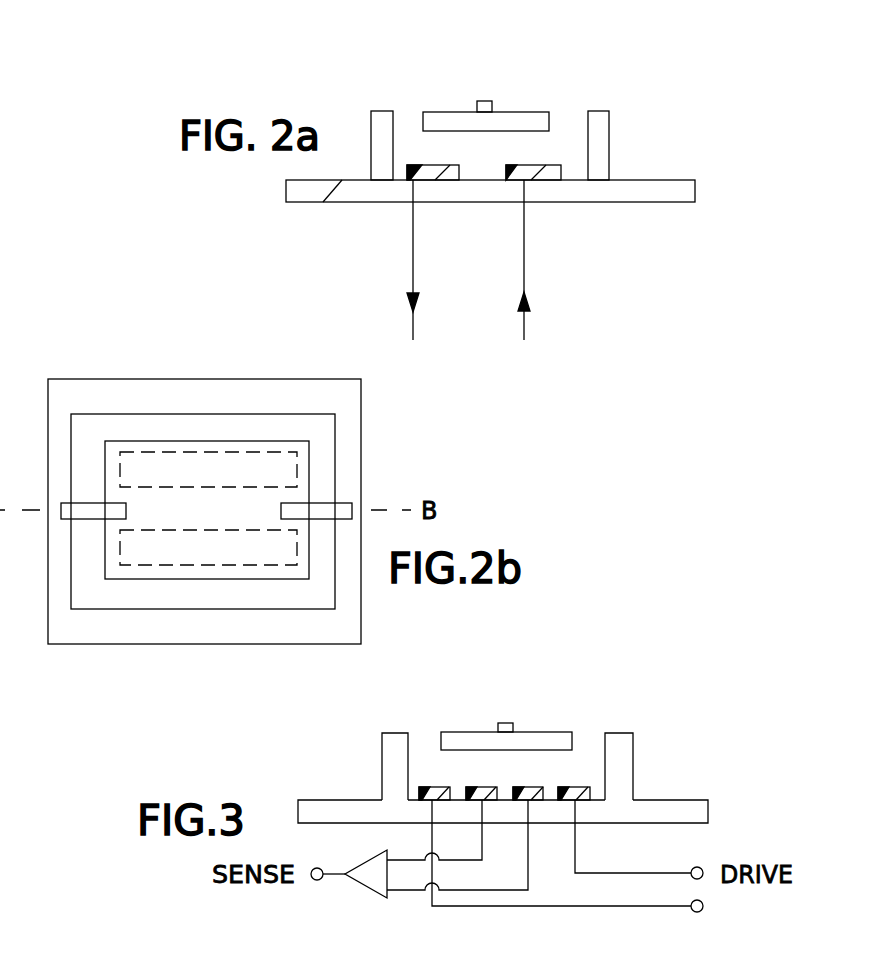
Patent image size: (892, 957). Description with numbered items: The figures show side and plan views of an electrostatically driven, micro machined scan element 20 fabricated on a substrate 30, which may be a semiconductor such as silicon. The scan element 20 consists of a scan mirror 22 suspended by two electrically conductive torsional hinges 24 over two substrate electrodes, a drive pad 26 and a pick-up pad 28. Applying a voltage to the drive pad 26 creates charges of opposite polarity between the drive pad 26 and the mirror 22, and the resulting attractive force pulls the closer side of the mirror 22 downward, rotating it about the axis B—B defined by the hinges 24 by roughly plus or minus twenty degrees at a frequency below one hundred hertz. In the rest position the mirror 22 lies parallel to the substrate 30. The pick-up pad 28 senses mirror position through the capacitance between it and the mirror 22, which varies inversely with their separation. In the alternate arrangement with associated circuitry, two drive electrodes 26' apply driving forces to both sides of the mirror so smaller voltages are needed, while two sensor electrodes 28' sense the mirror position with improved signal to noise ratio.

In FIG. 2A, the scan element 20 is at (522, 101).
In FIG. 2B, the scan element 20 is at (220, 521).
In FIG. 2A, the scan mirror 22 is at (550, 122).
In FIG. 3, the scan mirror 22 is at (527, 732).
In FIG. 2A, the torsional hinges 24 is at (491, 112).
In FIG. 2B, the torsional hinges 24 is at (326, 503).
In FIG. 2A, the drive pad 26 is at (518, 211).
In FIG. 2B, the drive pad 26 is at (208, 414).
In FIG. 2A, the pick-up pad 28 is at (428, 112).
In FIG. 2B, the pick-up pad 28 is at (208, 609).
In FIG. 2A, the substrate 30 is at (678, 198).
In FIG. 2B, the substrate 30 is at (88, 644).
In FIG. 3, the drive electrodes 26' is at (525, 738).
In FIG. 3, the sensor electrodes 28' is at (498, 744).